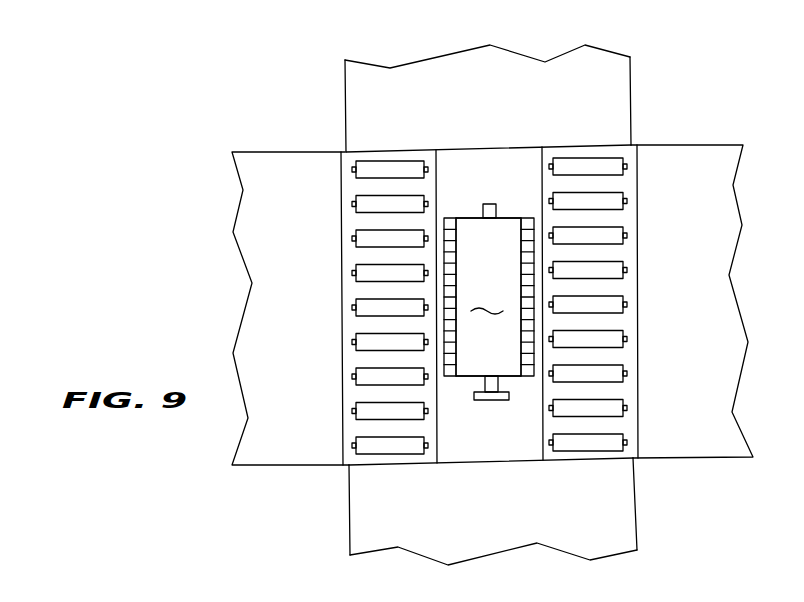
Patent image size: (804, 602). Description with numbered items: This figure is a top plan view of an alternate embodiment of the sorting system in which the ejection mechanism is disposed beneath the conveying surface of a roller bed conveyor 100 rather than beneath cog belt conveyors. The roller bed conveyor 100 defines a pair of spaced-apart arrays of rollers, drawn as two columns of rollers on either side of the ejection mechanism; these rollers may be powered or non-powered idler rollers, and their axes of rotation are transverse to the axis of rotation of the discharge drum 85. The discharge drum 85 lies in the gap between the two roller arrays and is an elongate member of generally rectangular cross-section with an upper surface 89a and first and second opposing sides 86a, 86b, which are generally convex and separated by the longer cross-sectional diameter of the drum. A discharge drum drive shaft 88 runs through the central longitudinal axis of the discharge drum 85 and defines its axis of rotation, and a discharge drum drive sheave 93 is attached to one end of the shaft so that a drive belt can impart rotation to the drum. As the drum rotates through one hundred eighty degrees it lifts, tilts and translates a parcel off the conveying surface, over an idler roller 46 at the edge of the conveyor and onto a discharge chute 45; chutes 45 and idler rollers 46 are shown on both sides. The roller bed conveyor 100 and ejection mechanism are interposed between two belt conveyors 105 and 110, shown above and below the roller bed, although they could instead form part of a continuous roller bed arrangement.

The discharge chute 45 is at (277, 151).
The idler roller 46 is at (633, 145).
The discharge drum 85 is at (510, 216).
The first opposing side 86a is at (444, 356).
The second opposing side 86b is at (534, 352).
The discharge drum drive shaft 88 is at (481, 212).
The upper surface 89a is at (488, 297).
The discharge drum drive sheave 93 is at (500, 400).
The roller bed conveyor 100 is at (556, 461).
The belt conveyor 105 is at (537, 57).
The belt conveyor 110 is at (637, 493).